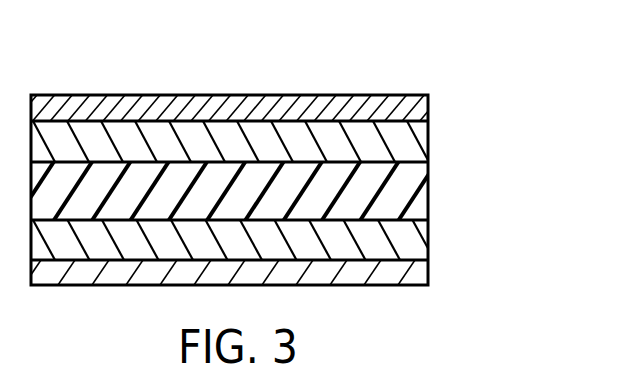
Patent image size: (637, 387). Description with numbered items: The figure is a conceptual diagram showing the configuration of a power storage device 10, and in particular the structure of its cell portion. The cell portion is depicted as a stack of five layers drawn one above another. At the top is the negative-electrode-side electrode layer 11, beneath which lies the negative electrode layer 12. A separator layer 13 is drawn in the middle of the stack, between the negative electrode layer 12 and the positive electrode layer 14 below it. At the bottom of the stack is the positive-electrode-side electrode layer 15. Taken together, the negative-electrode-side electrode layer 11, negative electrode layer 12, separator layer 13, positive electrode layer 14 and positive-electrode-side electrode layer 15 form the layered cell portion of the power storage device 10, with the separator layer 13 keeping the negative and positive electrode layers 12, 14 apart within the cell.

The power storage device 10 is at (128, 66).
The negative-electrode-side electrode layer 11 is at (420, 110).
The negative electrode layer 12 is at (418, 145).
The separator layer 13 is at (420, 183).
The positive electrode layer 14 is at (420, 233).
The positive-electrode-side electrode layer 15 is at (420, 278).